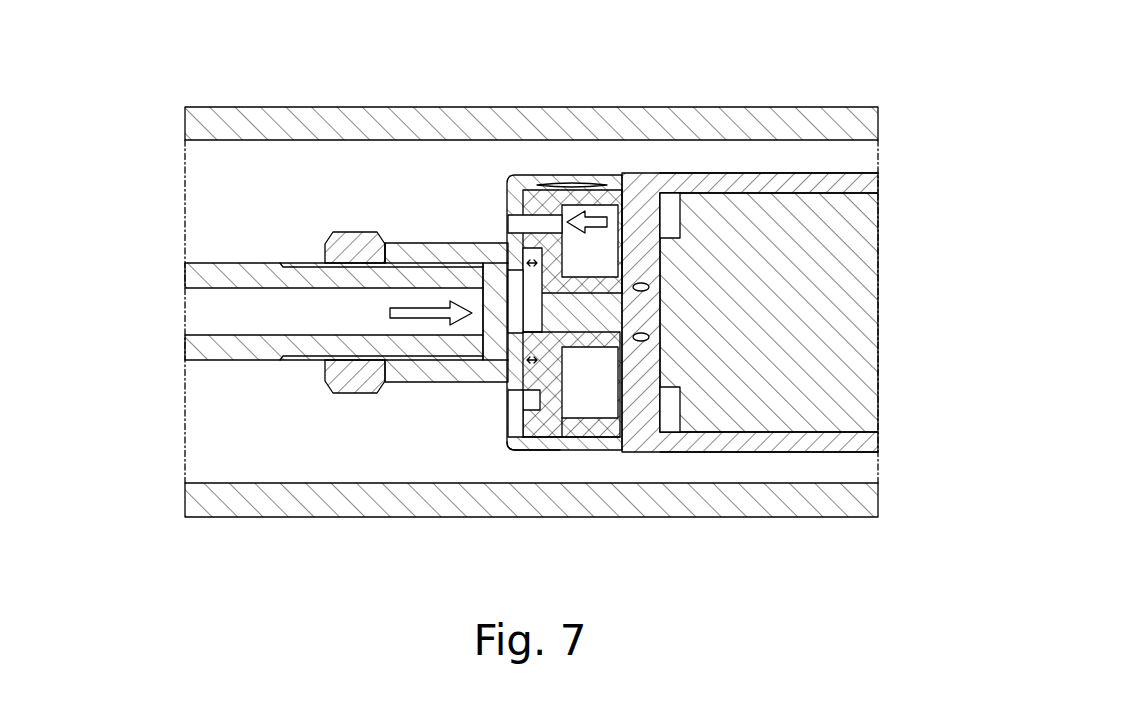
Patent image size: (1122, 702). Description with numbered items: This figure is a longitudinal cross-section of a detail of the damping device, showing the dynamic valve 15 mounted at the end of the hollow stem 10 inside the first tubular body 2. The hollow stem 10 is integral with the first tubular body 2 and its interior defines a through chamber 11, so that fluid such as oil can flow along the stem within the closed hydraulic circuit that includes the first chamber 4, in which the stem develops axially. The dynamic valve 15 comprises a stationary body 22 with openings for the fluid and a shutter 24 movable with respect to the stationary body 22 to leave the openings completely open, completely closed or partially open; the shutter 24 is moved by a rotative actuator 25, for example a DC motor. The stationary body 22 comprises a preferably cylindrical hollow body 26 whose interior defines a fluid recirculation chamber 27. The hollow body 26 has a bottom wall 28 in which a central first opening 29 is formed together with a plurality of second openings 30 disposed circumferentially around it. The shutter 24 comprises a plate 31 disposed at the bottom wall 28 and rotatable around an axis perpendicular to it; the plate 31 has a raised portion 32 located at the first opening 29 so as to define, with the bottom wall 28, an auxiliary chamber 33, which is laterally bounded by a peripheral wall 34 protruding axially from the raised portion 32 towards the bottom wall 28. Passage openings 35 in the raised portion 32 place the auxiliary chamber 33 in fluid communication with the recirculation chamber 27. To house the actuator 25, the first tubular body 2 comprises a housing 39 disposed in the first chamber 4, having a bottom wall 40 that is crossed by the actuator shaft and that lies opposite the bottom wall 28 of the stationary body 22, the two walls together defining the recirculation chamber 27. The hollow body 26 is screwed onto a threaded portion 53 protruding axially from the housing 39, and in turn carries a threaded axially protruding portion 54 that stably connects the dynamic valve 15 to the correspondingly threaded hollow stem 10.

The first tubular body 2 is at (288, 118).
The first chamber 4 is at (207, 164).
The hollow stem 10 is at (207, 272).
The through chamber 11 is at (210, 310).
The dynamic valve 15 is at (488, 452).
The stationary body 22 is at (600, 177).
The shutter 24 is at (557, 400).
The rotative actuator 25 is at (845, 224).
The hollow body 26 is at (562, 175).
The fluid recirculation chamber 27 is at (627, 210).
The bottom wall 28 is at (515, 186).
The first opening 29 is at (530, 338).
The second openings 30 is at (508, 220).
The plate 31 is at (572, 380).
The raised portion 32 is at (600, 385).
The auxiliary chamber 33 is at (500, 378).
The peripheral wall 34 is at (533, 433).
The passage openings 35 is at (545, 240).
The housing 39 is at (795, 183).
The bottom wall 40 is at (655, 365).
The threaded portion 53 is at (538, 195).
The threaded axially protruding portion 54 is at (413, 380).